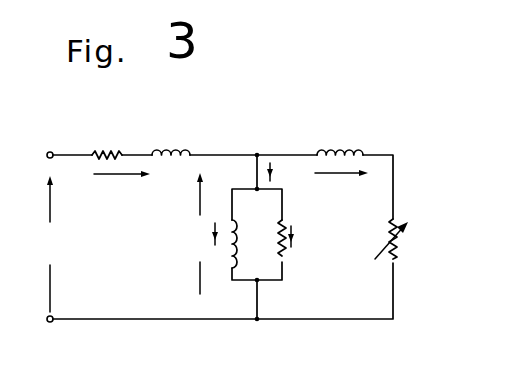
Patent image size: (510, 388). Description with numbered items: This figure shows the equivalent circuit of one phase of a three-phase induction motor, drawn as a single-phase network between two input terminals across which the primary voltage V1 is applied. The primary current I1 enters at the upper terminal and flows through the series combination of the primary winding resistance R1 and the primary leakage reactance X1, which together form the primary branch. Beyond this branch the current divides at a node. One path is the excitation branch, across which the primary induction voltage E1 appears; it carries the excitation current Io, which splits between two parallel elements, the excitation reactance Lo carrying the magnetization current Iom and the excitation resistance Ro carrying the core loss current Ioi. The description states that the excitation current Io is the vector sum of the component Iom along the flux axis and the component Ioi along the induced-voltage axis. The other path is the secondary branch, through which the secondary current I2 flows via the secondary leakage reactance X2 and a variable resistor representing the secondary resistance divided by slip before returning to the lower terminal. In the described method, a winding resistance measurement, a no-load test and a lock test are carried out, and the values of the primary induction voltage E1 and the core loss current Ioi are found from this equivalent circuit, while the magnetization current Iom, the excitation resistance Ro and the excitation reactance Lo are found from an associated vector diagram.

The primary winding resistance R1 is at (107, 142).
The primary leakage reactance X1 is at (171, 140).
The secondary leakage reactance X2 is at (340, 140).
The excitation reactance Lo is at (243, 244).
The excitation resistance Ro is at (272, 239).
The primary voltage V1 is at (50, 244).
The primary current I1 is at (121, 188).
The primary induction voltage E1 is at (191, 233).
The excitation current Io is at (284, 174).
The magnetization current Iom is at (216, 224).
The core loss current Ioi is at (304, 233).
The secondary current I2 is at (341, 184).